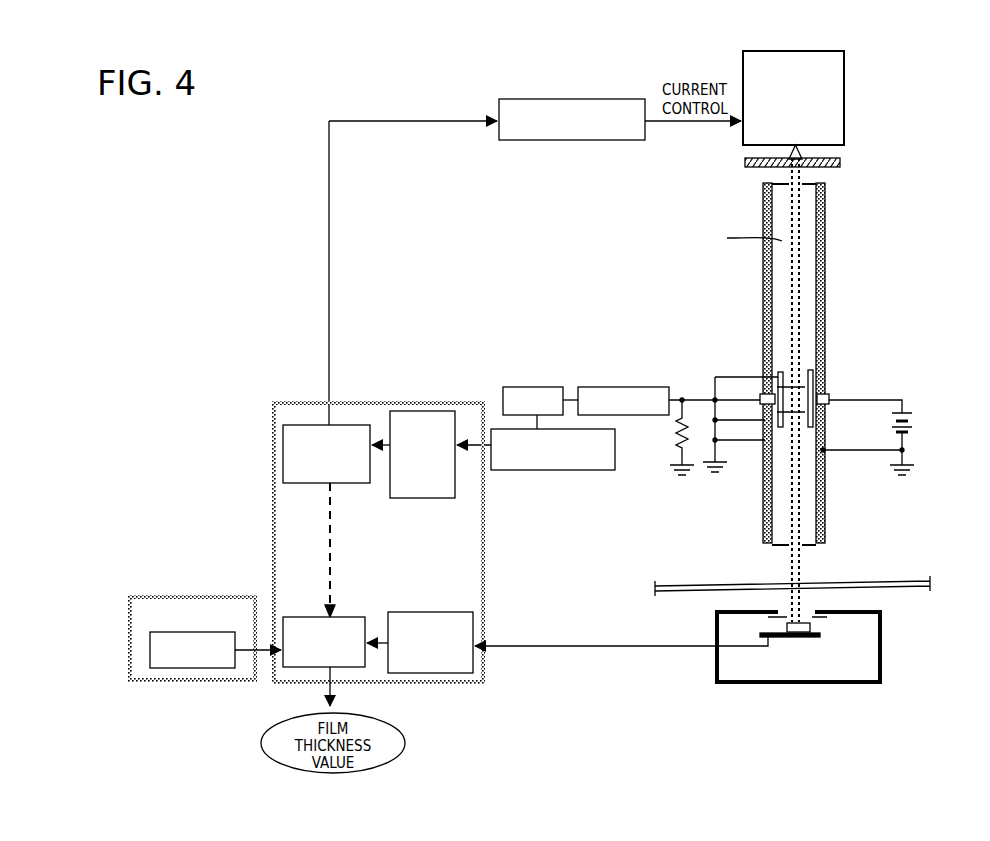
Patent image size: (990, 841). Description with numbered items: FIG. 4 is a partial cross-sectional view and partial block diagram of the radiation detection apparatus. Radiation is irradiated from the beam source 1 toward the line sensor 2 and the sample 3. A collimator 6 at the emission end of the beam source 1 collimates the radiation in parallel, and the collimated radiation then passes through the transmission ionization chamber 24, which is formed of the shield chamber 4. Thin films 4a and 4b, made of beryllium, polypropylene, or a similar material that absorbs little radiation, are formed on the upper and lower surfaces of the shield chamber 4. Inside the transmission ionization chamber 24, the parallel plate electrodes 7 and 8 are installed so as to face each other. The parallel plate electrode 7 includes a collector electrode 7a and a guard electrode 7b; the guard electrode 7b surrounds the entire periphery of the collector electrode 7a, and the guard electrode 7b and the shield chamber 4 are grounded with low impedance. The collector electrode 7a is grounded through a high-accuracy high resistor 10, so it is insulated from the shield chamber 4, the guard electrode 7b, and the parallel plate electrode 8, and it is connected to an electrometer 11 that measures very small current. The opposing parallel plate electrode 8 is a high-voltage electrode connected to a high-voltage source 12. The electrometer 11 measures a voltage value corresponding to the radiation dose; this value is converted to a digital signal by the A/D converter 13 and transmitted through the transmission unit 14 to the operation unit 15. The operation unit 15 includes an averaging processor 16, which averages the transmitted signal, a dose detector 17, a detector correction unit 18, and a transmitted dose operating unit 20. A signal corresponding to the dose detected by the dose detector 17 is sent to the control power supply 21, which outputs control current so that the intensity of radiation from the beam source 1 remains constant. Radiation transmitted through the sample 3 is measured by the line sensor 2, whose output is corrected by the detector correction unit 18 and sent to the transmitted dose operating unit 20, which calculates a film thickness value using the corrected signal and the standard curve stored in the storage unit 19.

The beam source 1 is at (846, 98).
The line sensor 2 is at (740, 683).
The sample 3 is at (910, 589).
The shield chamber 4 is at (784, 344).
The thin film 4a is at (812, 180).
The thin film 4b is at (815, 546).
The collimator 6 is at (842, 166).
The parallel plate electrode 7 is at (723, 355).
The collector electrode 7a is at (776, 386).
The guard electrode 7b is at (785, 369).
The parallel plate electrode 8 is at (829, 389).
The high resistor 10 is at (673, 447).
The electrometer 11 is at (608, 387).
The high-voltage source 12 is at (913, 421).
The A/D converter 13 is at (552, 387).
The transmission unit 14 is at (560, 470).
The operation unit 15 is at (368, 401).
The averaging processor 16 is at (440, 498).
The dose detector 17 is at (298, 425).
The detector correction unit 18 is at (440, 673).
The storage unit 19 is at (180, 595).
The transmitted dose operating unit 20 is at (360, 667).
The control power supply 21 is at (540, 99).
The transmission ionization chamber 24 is at (836, 262).